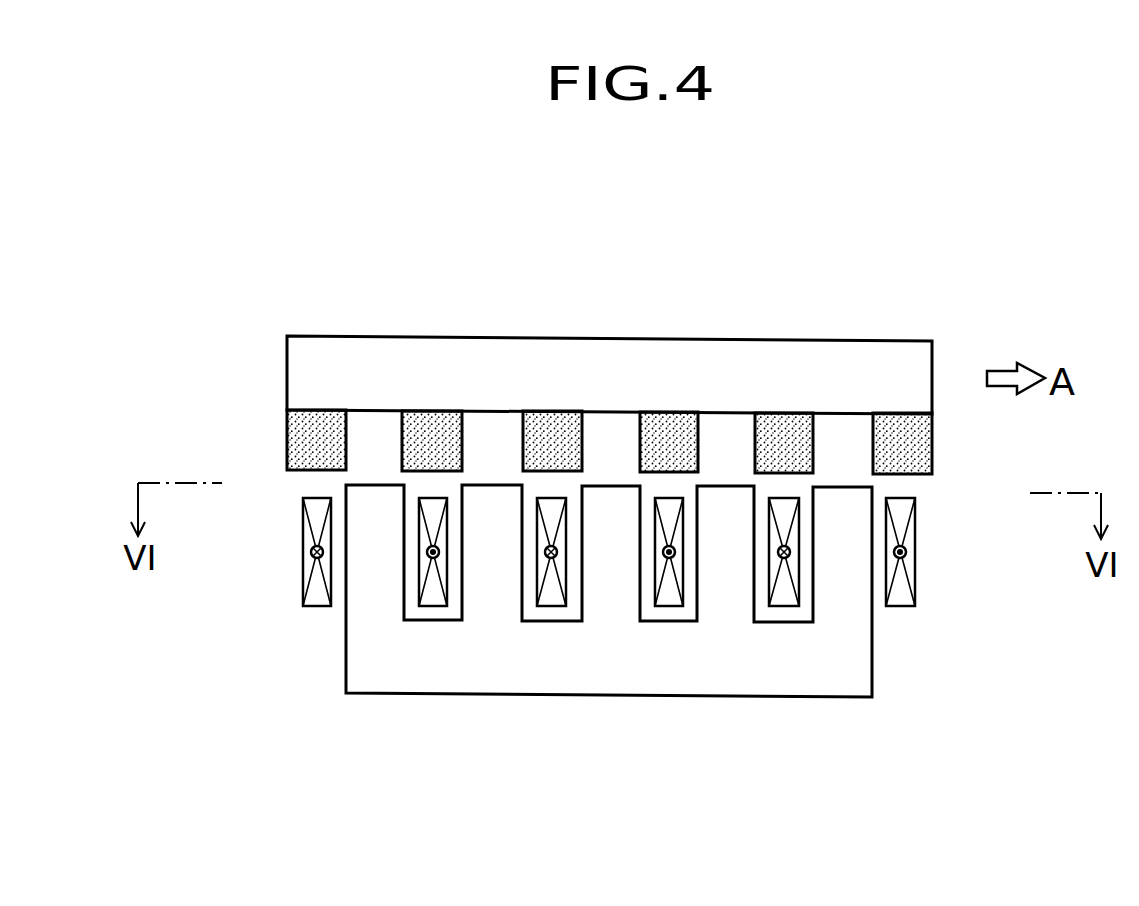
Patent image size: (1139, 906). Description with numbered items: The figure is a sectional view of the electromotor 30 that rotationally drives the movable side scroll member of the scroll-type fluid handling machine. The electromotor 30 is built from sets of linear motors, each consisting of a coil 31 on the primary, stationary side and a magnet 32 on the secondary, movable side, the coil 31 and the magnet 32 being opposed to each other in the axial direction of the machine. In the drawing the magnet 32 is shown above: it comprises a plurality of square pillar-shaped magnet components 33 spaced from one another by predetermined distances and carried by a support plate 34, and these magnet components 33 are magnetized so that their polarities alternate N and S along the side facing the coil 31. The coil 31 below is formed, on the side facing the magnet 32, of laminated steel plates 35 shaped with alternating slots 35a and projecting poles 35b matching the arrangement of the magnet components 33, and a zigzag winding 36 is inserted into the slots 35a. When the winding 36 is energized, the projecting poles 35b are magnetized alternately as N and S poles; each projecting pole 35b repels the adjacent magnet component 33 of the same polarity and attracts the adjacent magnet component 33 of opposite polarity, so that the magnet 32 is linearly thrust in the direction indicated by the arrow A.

The electromotor 30 is at (264, 418).
The coil 31 is at (345, 643).
The magnet 32 is at (379, 335).
The magnet components 33 is at (300, 439).
The support plate 34 is at (918, 377).
The laminated steel plates 35 is at (872, 681).
The slots 35a is at (643, 588).
The projecting poles 35b is at (346, 492).
The zigzag winding 36 is at (302, 572).